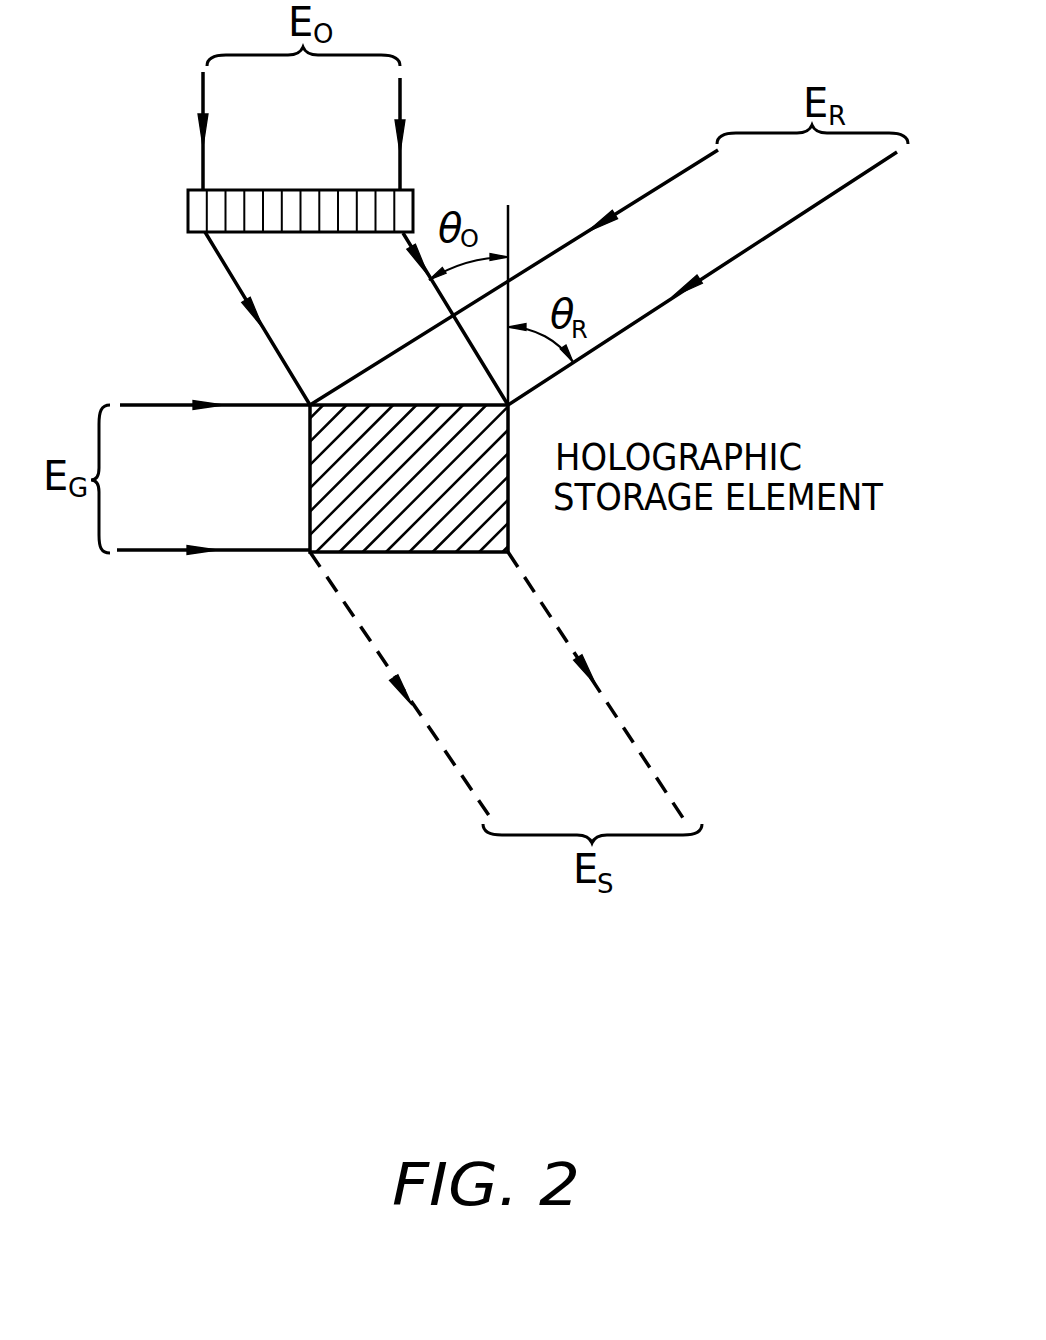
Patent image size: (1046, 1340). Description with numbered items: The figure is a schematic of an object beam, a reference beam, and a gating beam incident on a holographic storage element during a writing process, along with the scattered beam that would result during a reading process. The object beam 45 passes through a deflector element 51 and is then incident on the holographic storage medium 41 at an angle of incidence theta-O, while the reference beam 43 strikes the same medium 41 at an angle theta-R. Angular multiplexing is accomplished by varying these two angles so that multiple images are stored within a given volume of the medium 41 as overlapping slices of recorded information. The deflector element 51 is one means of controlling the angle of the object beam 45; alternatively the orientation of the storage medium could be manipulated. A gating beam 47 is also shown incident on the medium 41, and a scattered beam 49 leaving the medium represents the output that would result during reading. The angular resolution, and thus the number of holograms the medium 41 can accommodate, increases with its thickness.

The holographic storage medium 41 is at (510, 430).
The reference beam 43 is at (727, 233).
The object beam 45 is at (260, 260).
The gating beam 47 is at (255, 430).
The signal (diffracted output) beam 49 is at (615, 780).
The deflector element 51 is at (188, 208).